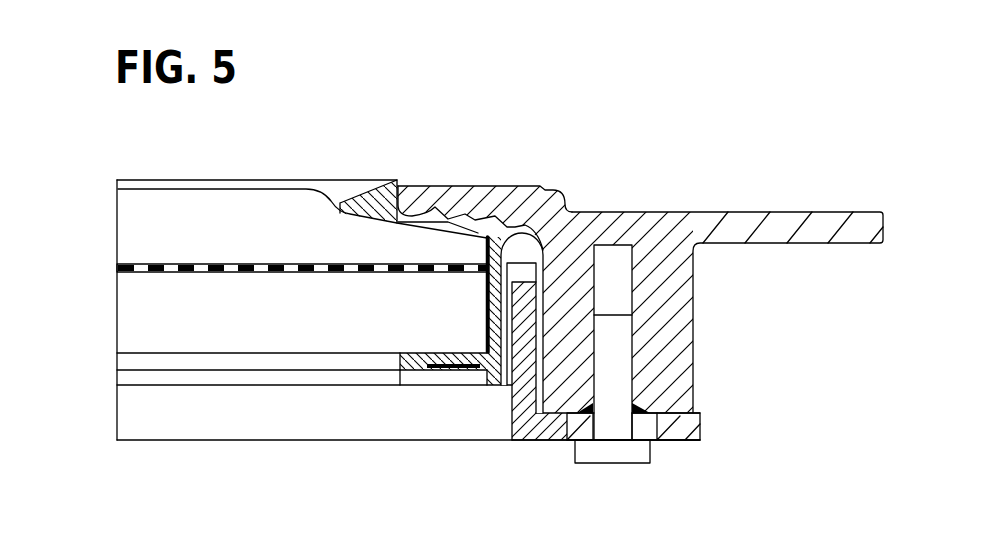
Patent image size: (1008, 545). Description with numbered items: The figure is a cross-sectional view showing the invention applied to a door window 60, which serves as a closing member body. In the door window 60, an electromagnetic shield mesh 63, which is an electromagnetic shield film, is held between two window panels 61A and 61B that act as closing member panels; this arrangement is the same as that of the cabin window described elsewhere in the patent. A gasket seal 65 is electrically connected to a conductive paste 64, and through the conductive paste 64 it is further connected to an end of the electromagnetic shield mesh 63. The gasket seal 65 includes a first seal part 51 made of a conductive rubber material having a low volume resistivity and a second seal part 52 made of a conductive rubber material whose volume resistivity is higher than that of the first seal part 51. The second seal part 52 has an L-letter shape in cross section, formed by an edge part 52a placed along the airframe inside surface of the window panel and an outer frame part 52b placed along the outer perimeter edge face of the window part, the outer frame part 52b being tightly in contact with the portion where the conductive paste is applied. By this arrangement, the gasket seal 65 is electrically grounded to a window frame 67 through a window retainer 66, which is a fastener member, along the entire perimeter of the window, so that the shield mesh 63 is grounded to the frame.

The door window 60 is at (321, 158).
The first seal part 51 is at (450, 217).
The second seal part 52 is at (453, 368).
The edge part 52a is at (408, 367).
The outer frame part 52b is at (487, 337).
The window panel 61A is at (133, 250).
The window panel 61B is at (133, 340).
The electromagnetic shield mesh 63 is at (138, 273).
The conductive paste 64 is at (487, 312).
The gasket seal 65 is at (540, 248).
The window retainer 66 is at (543, 430).
The window frame 67 is at (685, 215).